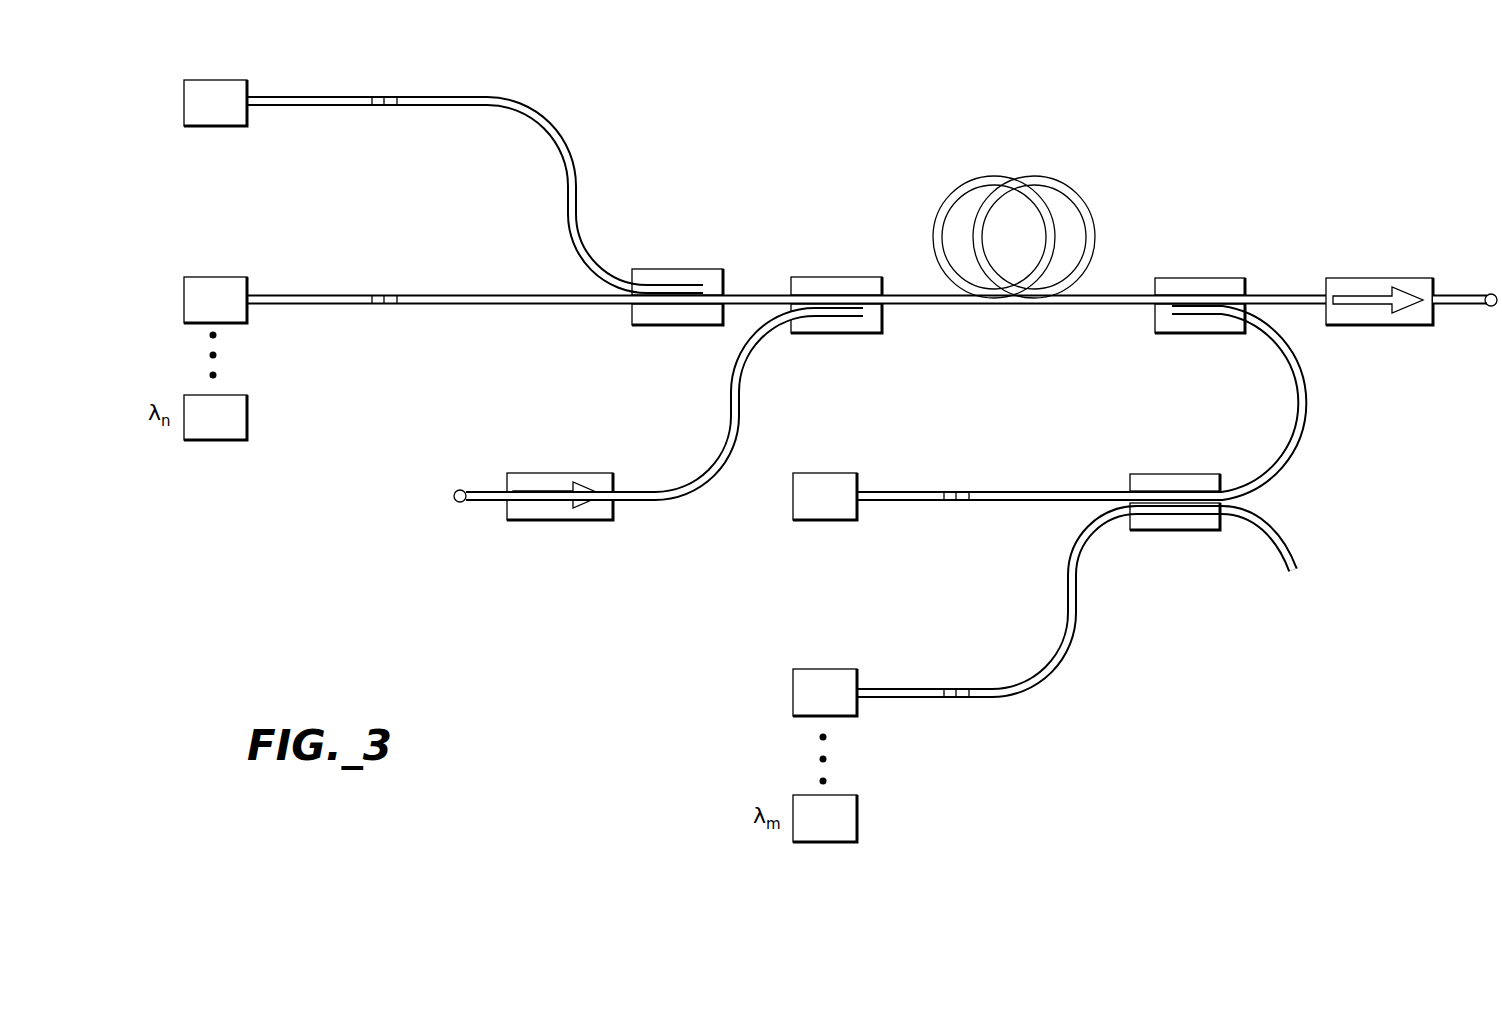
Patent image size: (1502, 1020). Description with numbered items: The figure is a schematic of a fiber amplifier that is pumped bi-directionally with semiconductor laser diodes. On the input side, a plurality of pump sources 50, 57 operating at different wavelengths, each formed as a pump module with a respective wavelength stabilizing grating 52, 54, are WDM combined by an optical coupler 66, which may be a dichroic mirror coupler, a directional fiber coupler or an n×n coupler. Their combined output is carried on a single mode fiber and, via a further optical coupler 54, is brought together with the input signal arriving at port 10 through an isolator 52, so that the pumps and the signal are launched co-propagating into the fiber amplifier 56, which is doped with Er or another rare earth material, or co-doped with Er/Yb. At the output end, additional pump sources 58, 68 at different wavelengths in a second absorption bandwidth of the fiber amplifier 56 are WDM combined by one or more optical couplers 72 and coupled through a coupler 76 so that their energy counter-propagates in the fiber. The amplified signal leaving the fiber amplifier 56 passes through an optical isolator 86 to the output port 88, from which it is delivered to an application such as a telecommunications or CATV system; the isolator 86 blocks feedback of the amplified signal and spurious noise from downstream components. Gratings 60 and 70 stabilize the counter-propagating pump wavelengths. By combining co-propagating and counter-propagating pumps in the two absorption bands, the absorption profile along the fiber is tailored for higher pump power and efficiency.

The input signal port 10 is at (465, 489).
The pump source 50 is at (200, 128).
The wavelength stabilizing grating / isolator 52 is at (380, 109).
The wavelength stabilizing grating / optical coupler 54 is at (380, 307).
The fiber amplifier 56 is at (990, 173).
The pump source 57 is at (200, 277).
The pump source 58 is at (830, 473).
The optical fiber 60 is at (955, 490).
The optical coupler 66 is at (670, 268).
The pump source 68 is at (830, 668).
The optical fiber 70 is at (955, 688).
The optical coupler 72 is at (1155, 473).
The coupler 76 is at (1185, 277).
The optical isolator 86 is at (1405, 277).
The output port 88 is at (1491, 292).